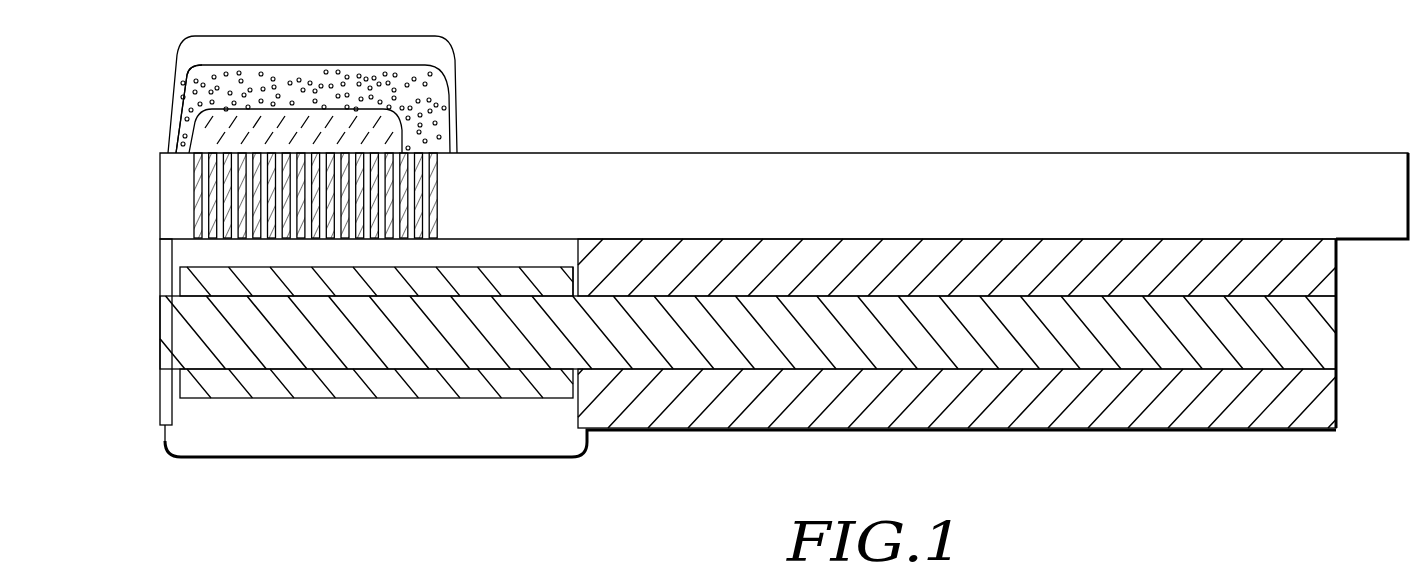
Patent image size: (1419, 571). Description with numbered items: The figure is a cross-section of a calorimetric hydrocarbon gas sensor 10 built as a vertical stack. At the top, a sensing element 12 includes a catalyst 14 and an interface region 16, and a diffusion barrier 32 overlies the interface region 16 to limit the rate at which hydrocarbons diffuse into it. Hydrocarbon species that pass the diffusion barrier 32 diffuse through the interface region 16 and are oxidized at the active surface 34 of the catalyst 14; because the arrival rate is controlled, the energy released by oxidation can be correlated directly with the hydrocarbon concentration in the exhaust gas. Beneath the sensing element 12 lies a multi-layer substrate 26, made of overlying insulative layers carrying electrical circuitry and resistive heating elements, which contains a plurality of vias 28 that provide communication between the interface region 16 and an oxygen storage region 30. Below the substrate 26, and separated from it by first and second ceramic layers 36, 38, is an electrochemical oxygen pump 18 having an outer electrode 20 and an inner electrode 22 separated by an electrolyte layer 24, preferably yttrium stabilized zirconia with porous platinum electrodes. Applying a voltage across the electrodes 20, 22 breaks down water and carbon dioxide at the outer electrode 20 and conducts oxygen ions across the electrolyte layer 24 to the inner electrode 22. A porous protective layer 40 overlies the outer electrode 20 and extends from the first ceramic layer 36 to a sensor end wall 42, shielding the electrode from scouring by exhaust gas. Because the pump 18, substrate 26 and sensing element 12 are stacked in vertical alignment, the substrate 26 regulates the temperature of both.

The calorimetric hydrocarbon gas sensor 10 is at (906, 110).
The sensing element 12 is at (147, 67).
The catalyst 14 is at (403, 135).
The interface region 16 is at (433, 95).
The electrochemical oxygen pump 18 is at (147, 297).
The outer electrode 20 is at (502, 382).
The inner electrode 22 is at (550, 277).
The electrolyte layer 24 is at (267, 382).
The multi-layer substrate 26 is at (147, 153).
The vias 28 is at (439, 190).
The oxygen storage region 30 is at (510, 250).
The diffusion barrier 32 is at (432, 55).
The active surface 34 is at (203, 102).
The first ceramic layer 36 is at (637, 407).
The second ceramic layer 38 is at (1320, 278).
The porous protective layer 40 is at (195, 438).
The sensor end wall 42 is at (166, 280).